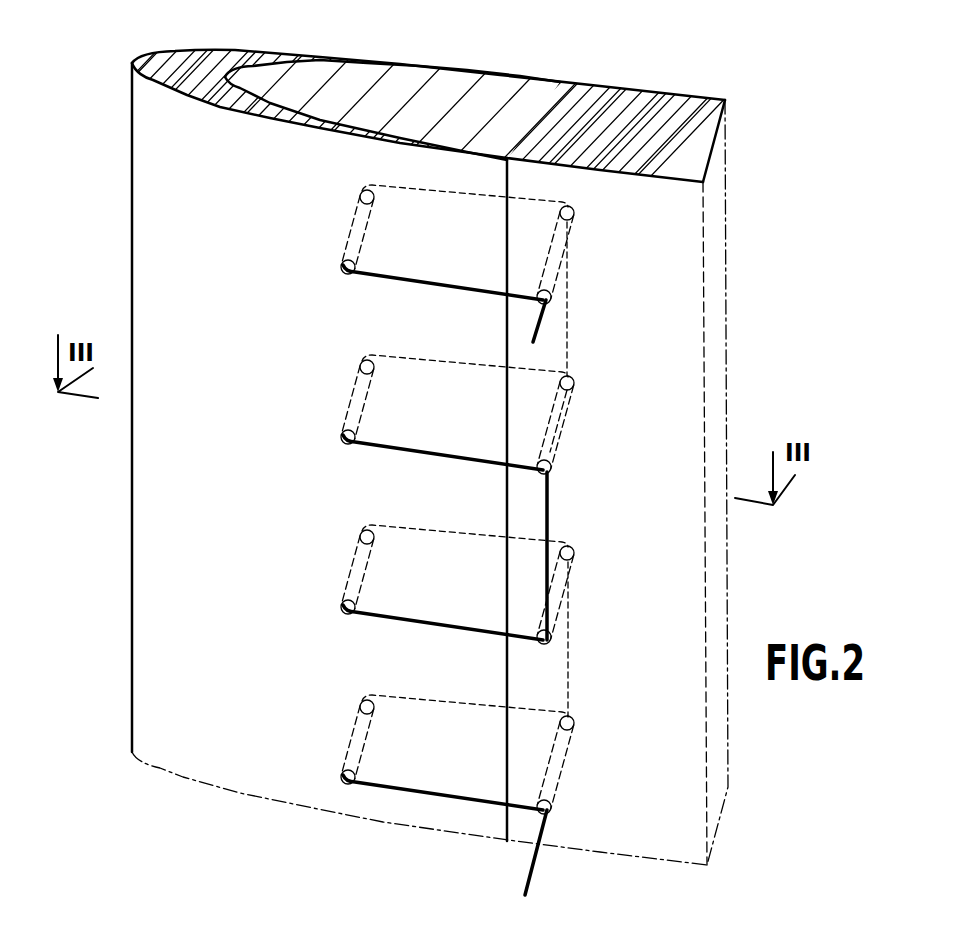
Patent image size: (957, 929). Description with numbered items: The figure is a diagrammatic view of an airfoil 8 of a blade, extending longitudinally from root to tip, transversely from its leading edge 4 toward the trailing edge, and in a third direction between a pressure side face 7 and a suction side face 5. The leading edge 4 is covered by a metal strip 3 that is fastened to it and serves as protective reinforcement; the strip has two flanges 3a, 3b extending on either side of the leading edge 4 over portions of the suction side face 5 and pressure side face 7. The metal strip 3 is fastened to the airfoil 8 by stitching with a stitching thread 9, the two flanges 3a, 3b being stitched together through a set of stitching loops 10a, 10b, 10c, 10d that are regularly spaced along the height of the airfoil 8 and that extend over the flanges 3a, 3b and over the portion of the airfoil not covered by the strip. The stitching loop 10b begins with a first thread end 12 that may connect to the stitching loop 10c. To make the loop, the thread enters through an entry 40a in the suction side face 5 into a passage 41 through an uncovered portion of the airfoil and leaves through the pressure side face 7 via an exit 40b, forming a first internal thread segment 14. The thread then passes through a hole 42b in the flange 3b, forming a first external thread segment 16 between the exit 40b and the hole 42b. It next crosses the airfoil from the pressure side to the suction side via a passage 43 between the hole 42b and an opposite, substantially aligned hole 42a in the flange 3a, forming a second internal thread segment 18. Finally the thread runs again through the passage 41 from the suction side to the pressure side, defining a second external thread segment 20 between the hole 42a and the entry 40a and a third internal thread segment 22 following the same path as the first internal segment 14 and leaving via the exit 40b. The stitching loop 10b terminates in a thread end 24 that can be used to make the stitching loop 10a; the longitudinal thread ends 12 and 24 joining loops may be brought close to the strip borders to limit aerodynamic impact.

The metal strip 3 is at (131, 62).
The flange 3a is at (312, 125).
The flange 3b is at (407, 63).
The leading edge 4 is at (223, 78).
The suction side face 5 is at (667, 197).
The pressure side face 7 is at (657, 93).
The airfoil 8 is at (670, 127).
The stitching thread 9 is at (532, 879).
The stitching loop 10a is at (298, 240).
The stitching loop 10b is at (424, 409).
The stitching loop 10c is at (281, 567).
The stitching loop 10d is at (297, 734).
The first thread end 12 is at (549, 531).
The first internal thread segment 14 is at (572, 397).
The first external thread segment 16 is at (427, 352).
The second internal thread segment 18 is at (357, 383).
The second external thread segment 20 is at (467, 467).
The third internal thread segment 22 is at (553, 443).
The thread end 24 is at (568, 298).
The entry 40a is at (547, 473).
The exit 40b is at (573, 383).
The passage 41 is at (570, 418).
The hole 42a is at (345, 440).
The hole 42b is at (365, 354).
The passage 43 is at (365, 405).